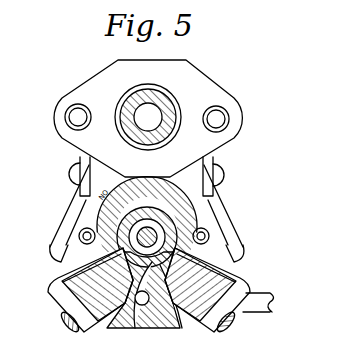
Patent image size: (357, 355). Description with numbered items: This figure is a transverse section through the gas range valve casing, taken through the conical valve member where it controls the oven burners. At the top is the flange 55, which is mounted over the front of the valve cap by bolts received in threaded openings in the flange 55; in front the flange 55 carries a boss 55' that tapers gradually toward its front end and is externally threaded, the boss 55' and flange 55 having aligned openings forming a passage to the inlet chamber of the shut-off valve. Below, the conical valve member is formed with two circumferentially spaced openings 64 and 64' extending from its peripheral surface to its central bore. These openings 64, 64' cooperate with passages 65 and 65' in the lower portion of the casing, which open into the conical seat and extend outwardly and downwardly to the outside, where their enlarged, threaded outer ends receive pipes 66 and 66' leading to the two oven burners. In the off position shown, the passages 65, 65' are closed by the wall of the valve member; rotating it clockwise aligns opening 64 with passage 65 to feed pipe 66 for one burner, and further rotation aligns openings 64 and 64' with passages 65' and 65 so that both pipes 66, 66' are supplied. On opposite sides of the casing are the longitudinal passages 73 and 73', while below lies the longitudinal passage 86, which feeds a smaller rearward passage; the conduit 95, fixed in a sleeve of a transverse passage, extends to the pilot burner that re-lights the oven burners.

The flange 55 is at (148, 118).
The boss 55' is at (111, 106).
The opening 64 is at (186, 222).
The opening 64' is at (62, 209).
The longitudinal passage 73 is at (245, 233).
The longitudinal passage 73' is at (53, 240).
The passage 65 is at (207, 301).
The passage 65' is at (90, 301).
The pipe 66 is at (239, 328).
The pipe 66' is at (47, 324).
The longitudinal passage 86 is at (138, 306).
The conduit 95 is at (267, 295).